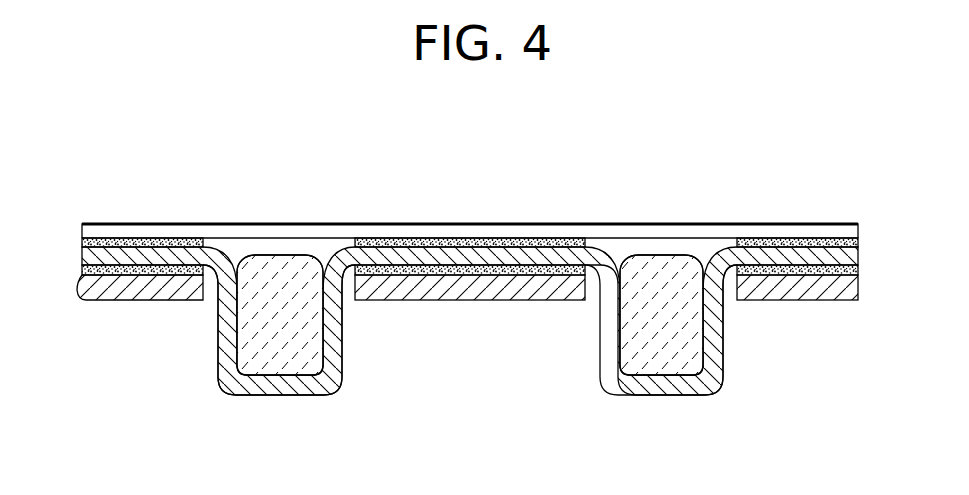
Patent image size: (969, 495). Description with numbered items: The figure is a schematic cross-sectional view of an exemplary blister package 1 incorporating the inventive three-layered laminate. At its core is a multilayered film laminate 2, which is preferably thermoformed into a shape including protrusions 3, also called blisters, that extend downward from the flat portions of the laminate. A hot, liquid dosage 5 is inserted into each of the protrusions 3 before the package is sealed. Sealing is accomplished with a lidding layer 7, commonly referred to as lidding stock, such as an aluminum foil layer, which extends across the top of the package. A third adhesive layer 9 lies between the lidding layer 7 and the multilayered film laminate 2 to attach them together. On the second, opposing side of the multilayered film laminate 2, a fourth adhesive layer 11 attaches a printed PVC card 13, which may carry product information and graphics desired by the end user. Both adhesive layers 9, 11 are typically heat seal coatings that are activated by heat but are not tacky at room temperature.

The blister package 1 is at (134, 351).
The multilayered film laminate 2 is at (859, 257).
The protrusions 3 is at (352, 390).
The hot, liquid dosage 5 is at (272, 330).
The lidding layer 7 is at (647, 224).
The third adhesive layer 9 is at (860, 243).
The fourth adhesive layer 11 is at (859, 272).
The printed PVC card 13 is at (796, 299).